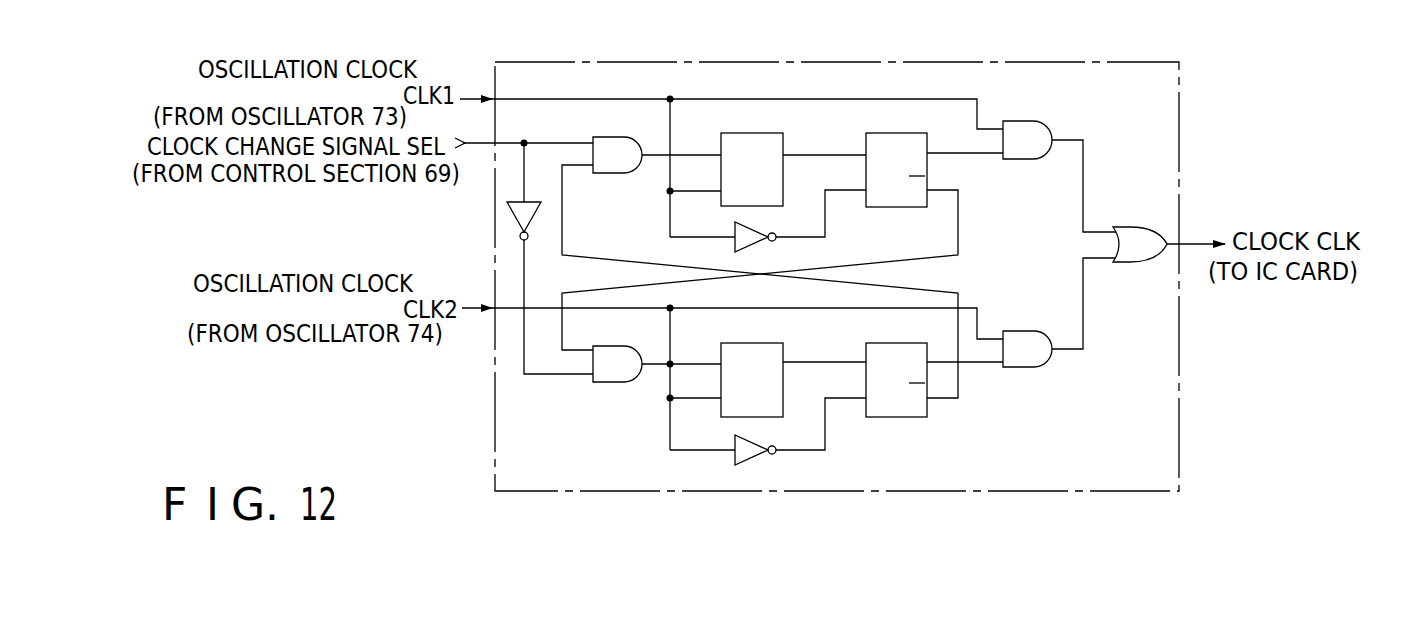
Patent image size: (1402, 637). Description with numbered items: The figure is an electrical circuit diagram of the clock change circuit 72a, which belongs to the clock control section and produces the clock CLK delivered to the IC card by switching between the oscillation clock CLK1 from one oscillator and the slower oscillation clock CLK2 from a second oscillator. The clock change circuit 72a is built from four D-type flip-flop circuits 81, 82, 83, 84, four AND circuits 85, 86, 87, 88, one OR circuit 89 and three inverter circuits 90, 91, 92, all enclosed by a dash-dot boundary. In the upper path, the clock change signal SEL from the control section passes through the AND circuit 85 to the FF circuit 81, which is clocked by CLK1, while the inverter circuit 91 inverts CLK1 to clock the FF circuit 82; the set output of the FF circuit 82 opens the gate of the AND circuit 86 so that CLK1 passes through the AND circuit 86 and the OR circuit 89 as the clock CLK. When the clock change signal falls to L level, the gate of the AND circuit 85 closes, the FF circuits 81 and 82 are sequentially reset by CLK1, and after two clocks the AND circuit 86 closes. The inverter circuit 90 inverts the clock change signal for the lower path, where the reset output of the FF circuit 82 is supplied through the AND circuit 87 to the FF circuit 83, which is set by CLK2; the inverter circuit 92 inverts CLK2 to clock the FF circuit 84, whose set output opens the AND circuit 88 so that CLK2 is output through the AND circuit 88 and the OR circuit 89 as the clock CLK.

The clock change circuit 72a is at (1007, 65).
The D-type flip-flop circuit 81 is at (770, 140).
The D-type flip-flop circuit 82 is at (920, 137).
The D-type flip-flop circuit 83 is at (760, 350).
The D-type flip-flop circuit 84 is at (905, 348).
The AND circuit 85 is at (622, 144).
The AND circuit 86 is at (1038, 130).
The AND circuit 87 is at (613, 353).
The AND circuit 88 is at (1027, 338).
The OR circuit 89 is at (1135, 233).
The inverter circuit 90 is at (540, 216).
The inverter circuit 91 is at (762, 247).
The inverter circuit 92 is at (752, 455).